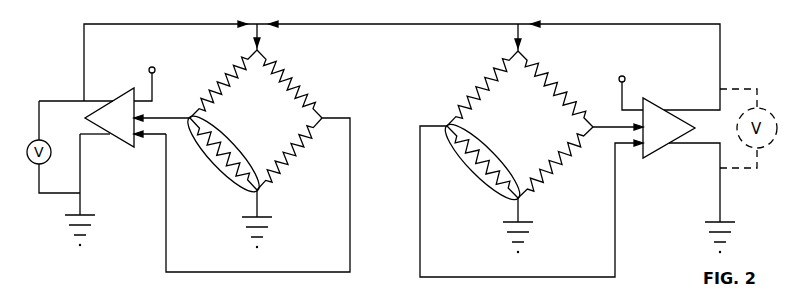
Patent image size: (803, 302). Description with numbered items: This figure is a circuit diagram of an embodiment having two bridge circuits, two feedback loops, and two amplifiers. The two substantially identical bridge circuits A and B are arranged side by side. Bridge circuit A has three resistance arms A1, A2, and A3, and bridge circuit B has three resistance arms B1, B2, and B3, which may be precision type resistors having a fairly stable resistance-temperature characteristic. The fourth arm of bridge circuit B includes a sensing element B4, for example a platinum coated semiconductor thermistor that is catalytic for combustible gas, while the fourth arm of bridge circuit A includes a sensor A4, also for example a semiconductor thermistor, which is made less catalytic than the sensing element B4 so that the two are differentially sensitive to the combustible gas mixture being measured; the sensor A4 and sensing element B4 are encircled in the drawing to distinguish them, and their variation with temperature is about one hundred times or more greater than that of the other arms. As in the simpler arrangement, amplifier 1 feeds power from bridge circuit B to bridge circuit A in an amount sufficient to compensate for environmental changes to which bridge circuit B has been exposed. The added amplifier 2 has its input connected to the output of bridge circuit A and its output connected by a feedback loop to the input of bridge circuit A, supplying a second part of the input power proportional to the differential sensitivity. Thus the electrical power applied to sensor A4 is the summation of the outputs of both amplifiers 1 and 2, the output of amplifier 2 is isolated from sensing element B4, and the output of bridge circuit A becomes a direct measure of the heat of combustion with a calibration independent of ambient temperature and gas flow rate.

The amplifier 1 is at (657, 106).
The amplifier 2 is at (110, 102).
The bridge circuit A is at (250, 136).
The bridge circuit B is at (515, 138).
The resistance arm A1 is at (289, 154).
The resistance arm A2 is at (289, 84).
The resistance arm A3 is at (223, 84).
The sensor A4 is at (223, 154).
The resistance arm B1 is at (555, 162).
The resistance arm B2 is at (555, 89).
The resistance arm B3 is at (481, 88).
The sensing element B4 is at (483, 162).